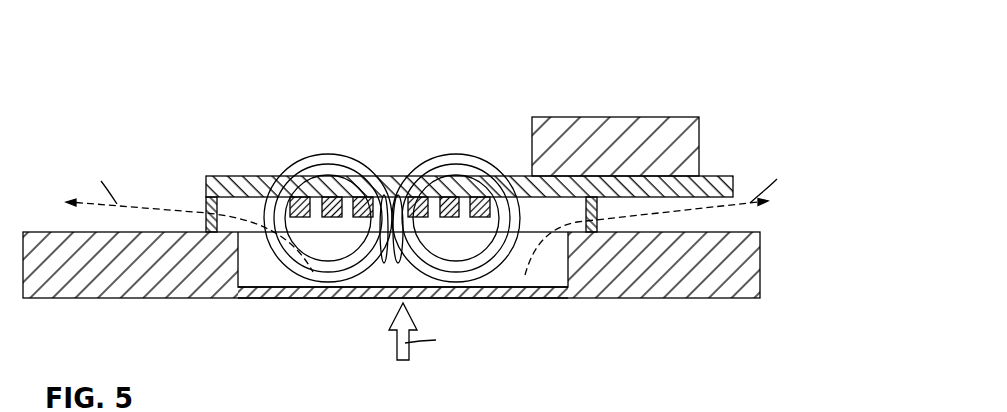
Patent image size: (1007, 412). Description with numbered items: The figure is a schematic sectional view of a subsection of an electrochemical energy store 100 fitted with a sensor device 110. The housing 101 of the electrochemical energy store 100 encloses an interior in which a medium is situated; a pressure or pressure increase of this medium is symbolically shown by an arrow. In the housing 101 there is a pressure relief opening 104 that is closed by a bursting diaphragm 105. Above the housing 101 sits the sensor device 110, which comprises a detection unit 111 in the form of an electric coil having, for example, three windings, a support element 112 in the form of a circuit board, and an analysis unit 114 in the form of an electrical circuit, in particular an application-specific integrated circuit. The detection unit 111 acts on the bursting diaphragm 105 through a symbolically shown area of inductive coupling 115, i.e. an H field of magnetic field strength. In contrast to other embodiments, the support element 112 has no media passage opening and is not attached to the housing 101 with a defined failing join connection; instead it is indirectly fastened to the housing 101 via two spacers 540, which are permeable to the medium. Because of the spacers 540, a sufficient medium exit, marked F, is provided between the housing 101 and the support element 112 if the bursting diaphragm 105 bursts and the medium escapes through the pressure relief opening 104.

The electrochemical energy store 100 is at (122, 95).
The housing 101 is at (108, 300).
The pressure relief opening 104 is at (543, 268).
The bursting diaphragm 105 is at (275, 293).
The sensor device 110 is at (335, 93).
The detection unit 111 is at (337, 206).
The support element 112 is at (710, 183).
The analysis unit 114 is at (614, 137).
The area of inductive coupling 115 is at (362, 156).
The spacer 540 is at (205, 202).